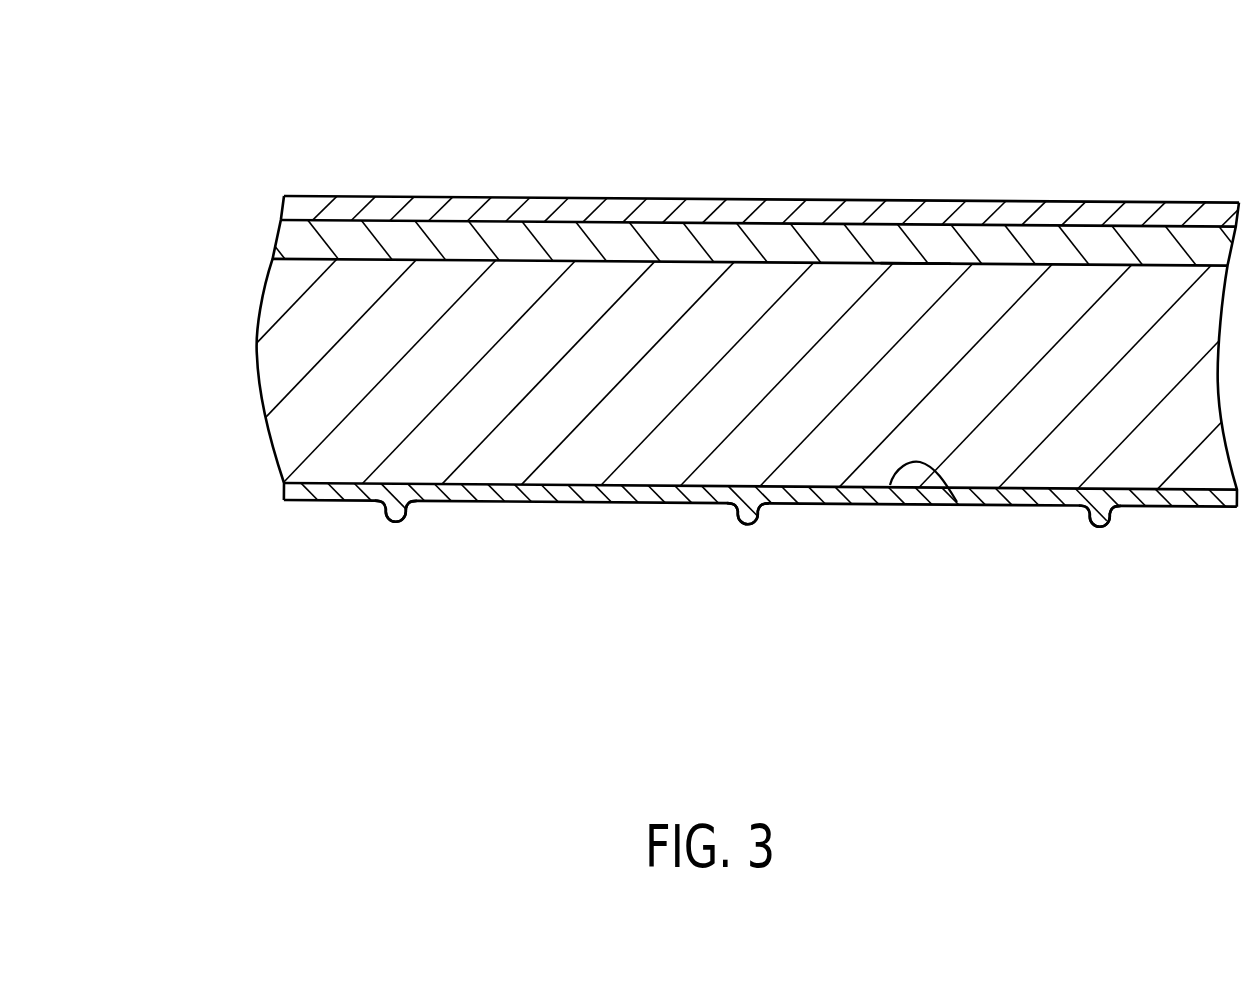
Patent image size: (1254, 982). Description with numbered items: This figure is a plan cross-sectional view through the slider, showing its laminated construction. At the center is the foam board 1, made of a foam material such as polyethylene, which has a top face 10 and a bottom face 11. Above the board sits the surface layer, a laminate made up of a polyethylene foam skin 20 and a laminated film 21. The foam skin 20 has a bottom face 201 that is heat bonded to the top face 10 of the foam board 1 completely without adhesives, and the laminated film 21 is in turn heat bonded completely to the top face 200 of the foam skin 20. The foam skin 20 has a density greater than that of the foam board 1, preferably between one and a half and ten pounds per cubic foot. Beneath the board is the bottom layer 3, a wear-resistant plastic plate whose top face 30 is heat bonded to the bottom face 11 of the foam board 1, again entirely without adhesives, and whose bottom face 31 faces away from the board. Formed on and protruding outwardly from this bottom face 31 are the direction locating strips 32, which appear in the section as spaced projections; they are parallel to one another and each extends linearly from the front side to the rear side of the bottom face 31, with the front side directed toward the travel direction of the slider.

The foam board 1 is at (298, 376).
The top face 10 is at (358, 255).
The bottom face 11 is at (322, 483).
The polyethylene foam skin 20 is at (670, 233).
The top face 200 is at (550, 218).
The bottom face 201 is at (942, 261).
The laminated film 21 is at (772, 207).
The bottom layer 3 is at (588, 494).
The top face 30 is at (957, 502).
The bottom face 31 is at (817, 502).
The direction locating strips 32 is at (745, 525).